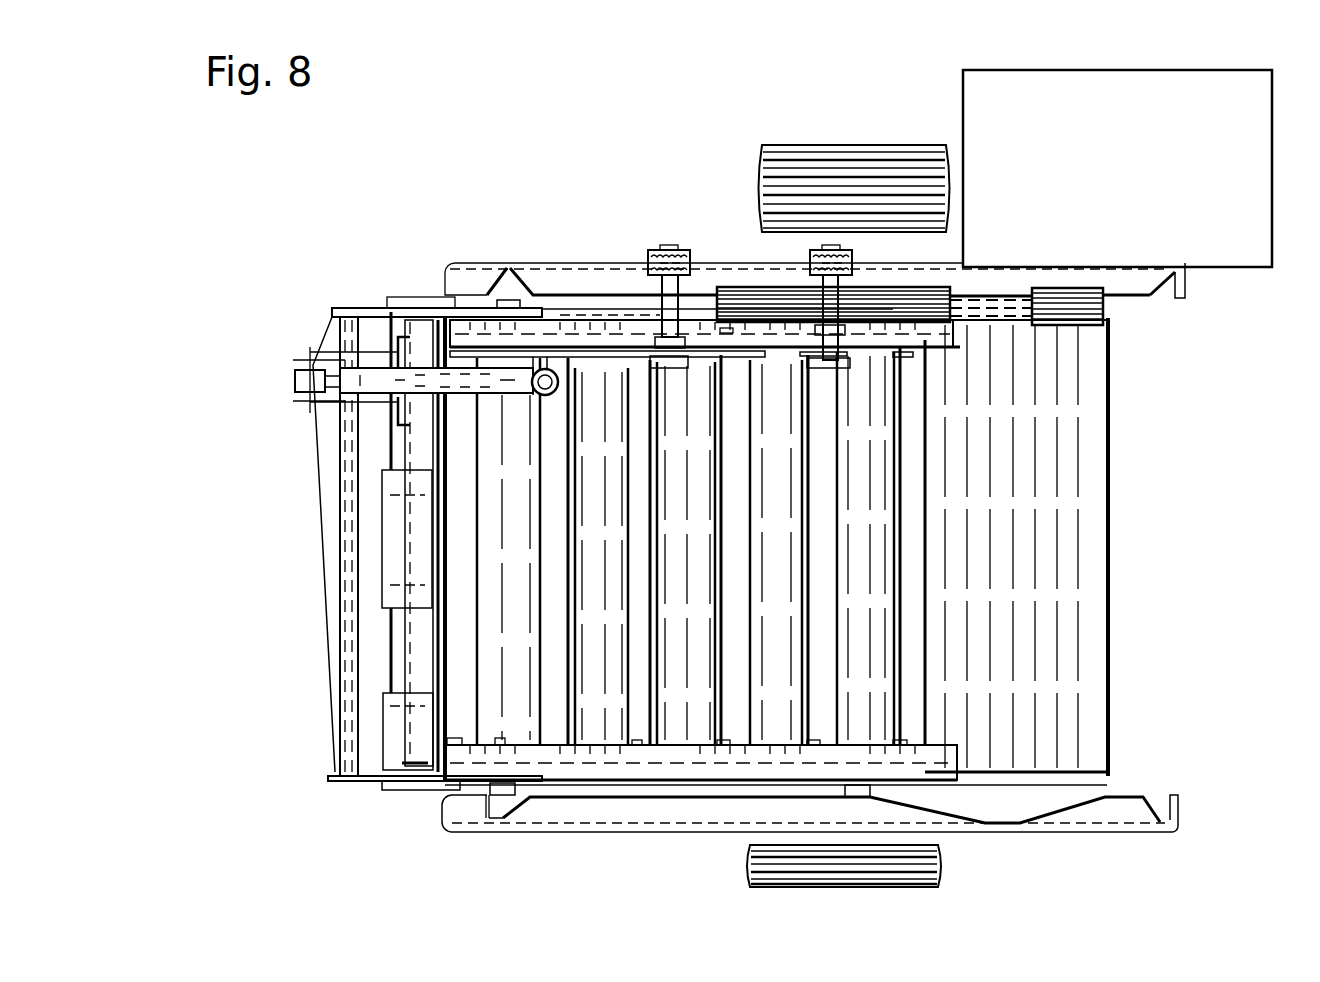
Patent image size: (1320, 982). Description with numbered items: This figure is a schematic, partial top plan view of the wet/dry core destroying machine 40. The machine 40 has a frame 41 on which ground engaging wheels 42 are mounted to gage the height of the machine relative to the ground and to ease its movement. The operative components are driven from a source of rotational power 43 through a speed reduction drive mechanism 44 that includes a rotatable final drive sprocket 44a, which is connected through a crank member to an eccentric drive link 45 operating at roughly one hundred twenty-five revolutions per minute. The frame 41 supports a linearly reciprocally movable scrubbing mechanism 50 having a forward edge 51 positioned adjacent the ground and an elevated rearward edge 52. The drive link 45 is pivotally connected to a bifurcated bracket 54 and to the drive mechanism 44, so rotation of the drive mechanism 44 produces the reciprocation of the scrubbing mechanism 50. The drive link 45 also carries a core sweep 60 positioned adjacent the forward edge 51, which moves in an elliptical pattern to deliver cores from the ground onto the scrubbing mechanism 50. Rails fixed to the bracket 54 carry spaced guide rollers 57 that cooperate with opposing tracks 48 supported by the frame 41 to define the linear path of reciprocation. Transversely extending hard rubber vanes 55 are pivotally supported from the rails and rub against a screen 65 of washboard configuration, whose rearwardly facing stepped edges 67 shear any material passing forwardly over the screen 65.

The core destroying machine 40 is at (350, 178).
The frame 41 is at (1155, 293).
The ground engaging wheels 42 is at (793, 147).
The source of rotational power 43 is at (990, 70).
The speed reduction drive mechanism 44 is at (743, 220).
The final drive sprocket 44a is at (593, 350).
The eccentric drive link 45 is at (377, 377).
The tracks 48 is at (1113, 787).
The scrubbing mechanism 50 is at (1140, 512).
The forward edge 51 is at (382, 743).
The rearward edge 52 is at (1110, 588).
The bifurcated bracket 54 is at (423, 308).
The vanes 55 is at (910, 462).
The guide rollers 57 is at (518, 293).
The core sweep 60 is at (407, 452).
The screen 65 is at (1088, 693).
The stepped edges 67 is at (1110, 617).